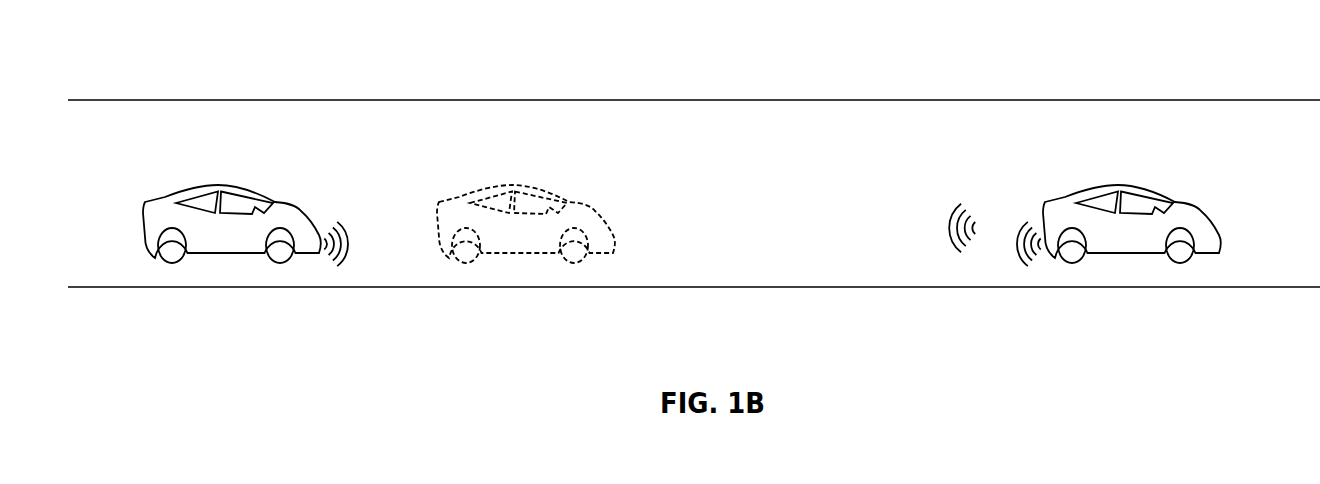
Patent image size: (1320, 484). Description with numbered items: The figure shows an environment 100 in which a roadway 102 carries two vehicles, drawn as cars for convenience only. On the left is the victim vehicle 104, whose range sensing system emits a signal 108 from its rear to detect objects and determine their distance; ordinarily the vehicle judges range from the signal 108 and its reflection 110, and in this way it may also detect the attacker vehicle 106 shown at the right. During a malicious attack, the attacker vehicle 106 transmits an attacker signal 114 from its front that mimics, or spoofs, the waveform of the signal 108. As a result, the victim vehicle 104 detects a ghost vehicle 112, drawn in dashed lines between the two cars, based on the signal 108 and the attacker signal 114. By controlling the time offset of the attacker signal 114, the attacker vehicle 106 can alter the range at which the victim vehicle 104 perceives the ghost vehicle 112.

The environment 100 is at (1178, 72).
The roadway 102 is at (775, 331).
The victim vehicle 104 is at (290, 168).
The attacker vehicle 106 is at (1190, 170).
The signal 108 is at (358, 190).
The reflection 110 is at (972, 171).
The ghost vehicle 112 is at (620, 169).
The attacker signal 114 is at (1040, 190).